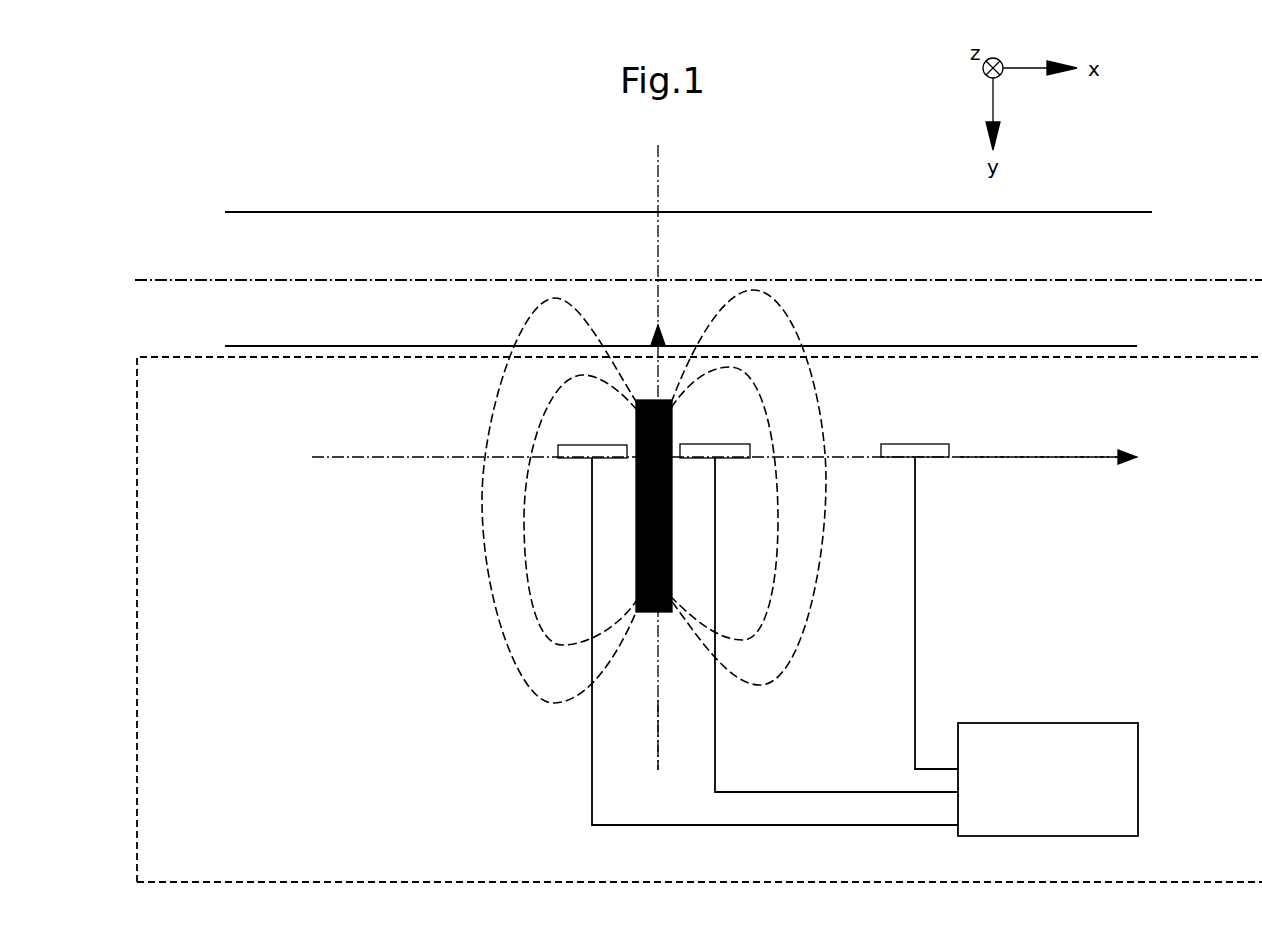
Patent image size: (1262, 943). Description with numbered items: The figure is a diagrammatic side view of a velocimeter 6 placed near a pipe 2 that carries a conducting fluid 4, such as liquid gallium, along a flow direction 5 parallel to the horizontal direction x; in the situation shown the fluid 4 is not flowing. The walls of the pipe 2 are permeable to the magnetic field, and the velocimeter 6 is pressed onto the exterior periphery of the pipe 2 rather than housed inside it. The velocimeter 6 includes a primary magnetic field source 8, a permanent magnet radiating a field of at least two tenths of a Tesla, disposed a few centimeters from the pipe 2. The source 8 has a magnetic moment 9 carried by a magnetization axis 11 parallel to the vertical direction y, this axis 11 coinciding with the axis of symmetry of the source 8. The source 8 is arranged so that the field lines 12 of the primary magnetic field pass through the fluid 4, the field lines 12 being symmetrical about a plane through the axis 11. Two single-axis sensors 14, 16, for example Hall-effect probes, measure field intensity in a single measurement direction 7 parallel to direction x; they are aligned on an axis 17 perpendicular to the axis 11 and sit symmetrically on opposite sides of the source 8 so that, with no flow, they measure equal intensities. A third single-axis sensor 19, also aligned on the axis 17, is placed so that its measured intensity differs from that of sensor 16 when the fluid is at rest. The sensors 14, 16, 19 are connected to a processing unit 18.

The pipe 2 is at (483, 212).
The conducting fluid 4 is at (353, 232).
The flow direction 5 is at (183, 280).
The velocimeter 6 is at (128, 347).
The measurement direction 7 is at (1125, 452).
The primary magnetic field source 8 is at (636, 433).
The magnetic moment 9 is at (658, 375).
The magnetization axis 11 is at (658, 740).
The field lines 12 is at (525, 552).
The single-axis sensor 14 is at (560, 450).
The single-axis sensor 16 is at (728, 450).
The axis 17 is at (1018, 457).
The processing unit 18 is at (1041, 792).
The third single-axis sensor 19 is at (938, 450).